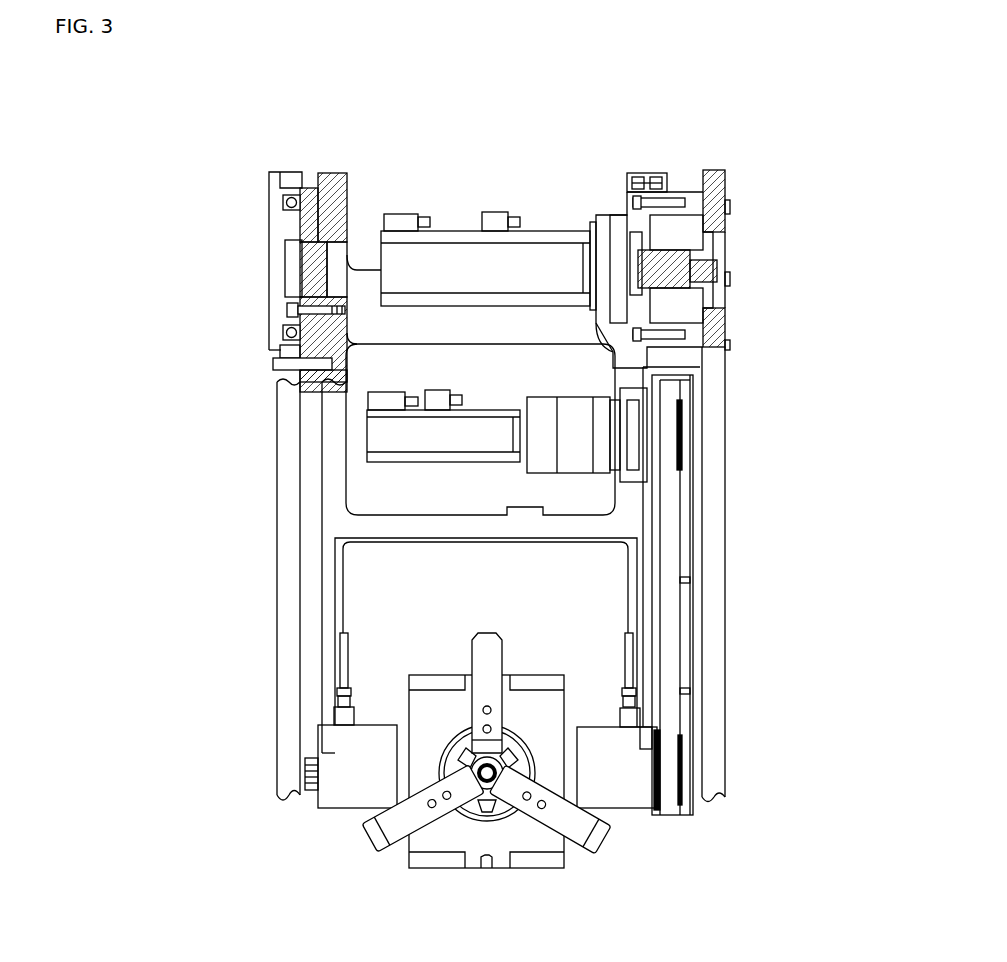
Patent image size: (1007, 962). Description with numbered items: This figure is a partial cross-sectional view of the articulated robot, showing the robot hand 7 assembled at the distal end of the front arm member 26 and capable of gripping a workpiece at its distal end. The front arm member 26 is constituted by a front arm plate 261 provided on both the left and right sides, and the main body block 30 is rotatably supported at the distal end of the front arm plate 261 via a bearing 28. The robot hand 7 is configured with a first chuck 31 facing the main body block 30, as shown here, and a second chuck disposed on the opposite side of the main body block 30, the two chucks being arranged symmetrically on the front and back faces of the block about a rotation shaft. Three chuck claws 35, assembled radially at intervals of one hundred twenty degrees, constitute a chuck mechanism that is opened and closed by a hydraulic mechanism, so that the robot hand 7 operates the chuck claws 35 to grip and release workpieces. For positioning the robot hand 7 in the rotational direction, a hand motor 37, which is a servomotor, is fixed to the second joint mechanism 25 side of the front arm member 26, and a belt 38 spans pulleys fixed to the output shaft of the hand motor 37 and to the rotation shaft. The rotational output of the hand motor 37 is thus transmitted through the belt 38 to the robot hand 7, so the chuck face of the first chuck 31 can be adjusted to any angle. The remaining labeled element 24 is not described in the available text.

The robot hand 7 is at (486, 878).
The side wall of frame 24 is at (720, 396).
The second joint mechanism 25 is at (556, 196).
The front arm member 26 is at (340, 541).
The front arm plate 261 is at (325, 603).
The bearing 28 is at (350, 793).
The main body block 30 is at (437, 850).
The first chuck 31 is at (508, 716).
The chuck claw 35 is at (596, 828).
The hand motor 37 is at (400, 436).
The belt 38 is at (667, 683).